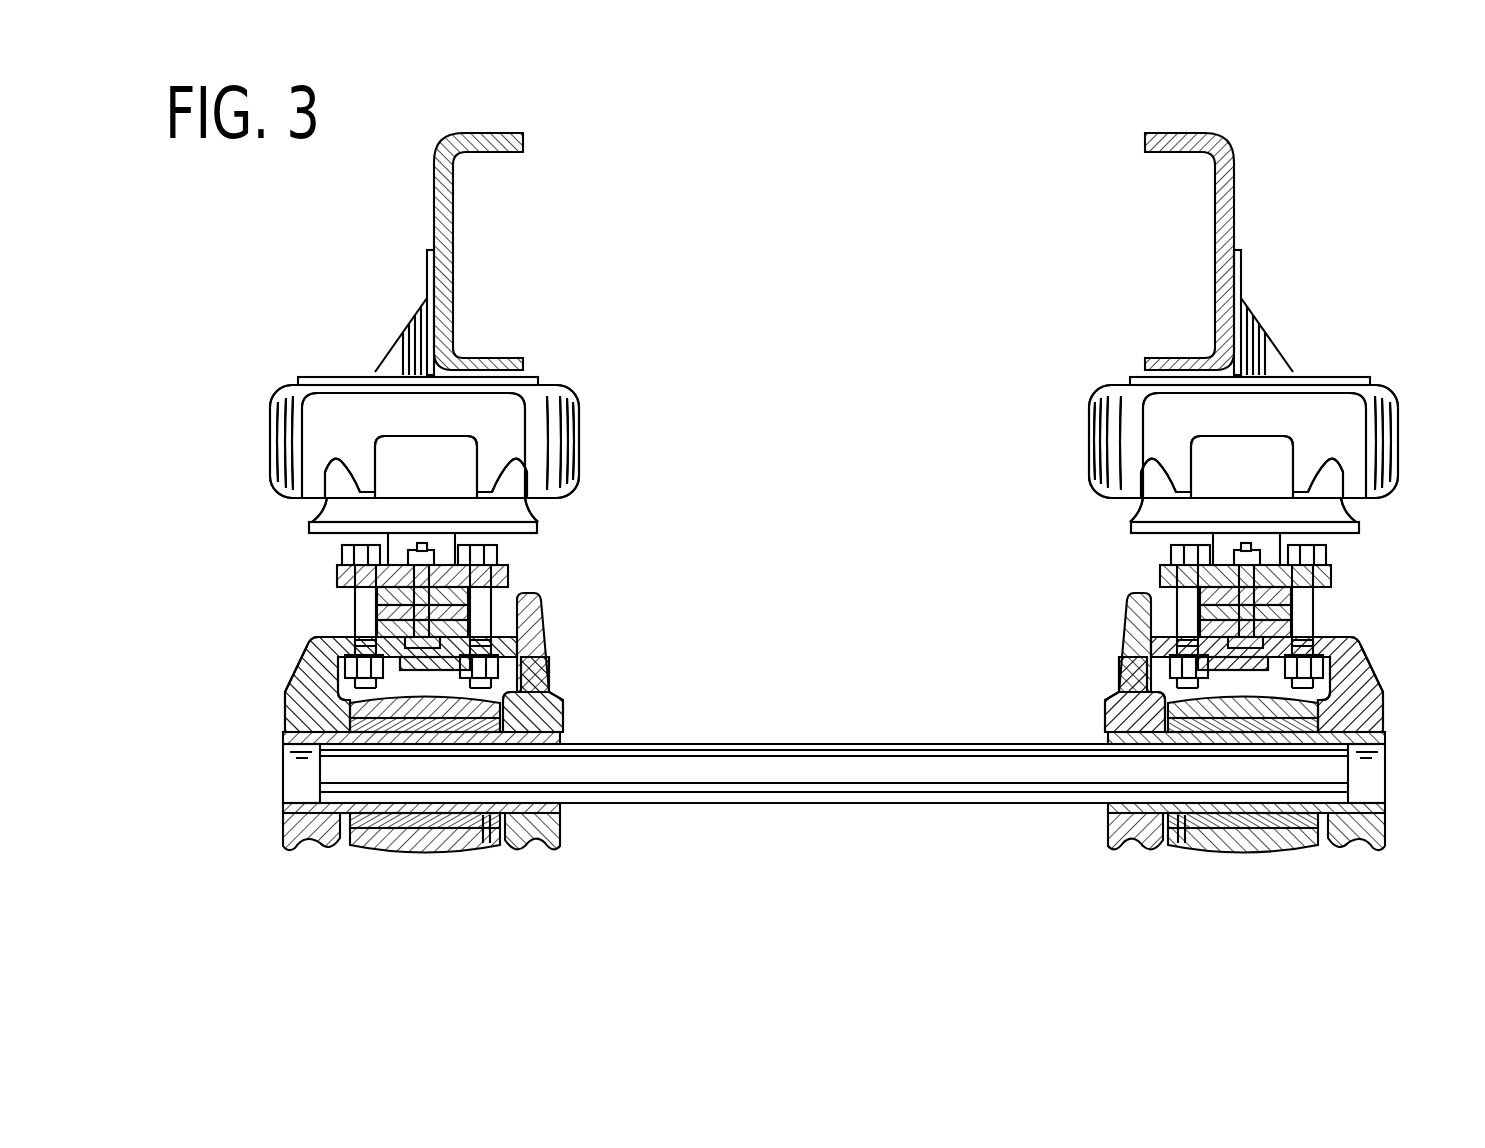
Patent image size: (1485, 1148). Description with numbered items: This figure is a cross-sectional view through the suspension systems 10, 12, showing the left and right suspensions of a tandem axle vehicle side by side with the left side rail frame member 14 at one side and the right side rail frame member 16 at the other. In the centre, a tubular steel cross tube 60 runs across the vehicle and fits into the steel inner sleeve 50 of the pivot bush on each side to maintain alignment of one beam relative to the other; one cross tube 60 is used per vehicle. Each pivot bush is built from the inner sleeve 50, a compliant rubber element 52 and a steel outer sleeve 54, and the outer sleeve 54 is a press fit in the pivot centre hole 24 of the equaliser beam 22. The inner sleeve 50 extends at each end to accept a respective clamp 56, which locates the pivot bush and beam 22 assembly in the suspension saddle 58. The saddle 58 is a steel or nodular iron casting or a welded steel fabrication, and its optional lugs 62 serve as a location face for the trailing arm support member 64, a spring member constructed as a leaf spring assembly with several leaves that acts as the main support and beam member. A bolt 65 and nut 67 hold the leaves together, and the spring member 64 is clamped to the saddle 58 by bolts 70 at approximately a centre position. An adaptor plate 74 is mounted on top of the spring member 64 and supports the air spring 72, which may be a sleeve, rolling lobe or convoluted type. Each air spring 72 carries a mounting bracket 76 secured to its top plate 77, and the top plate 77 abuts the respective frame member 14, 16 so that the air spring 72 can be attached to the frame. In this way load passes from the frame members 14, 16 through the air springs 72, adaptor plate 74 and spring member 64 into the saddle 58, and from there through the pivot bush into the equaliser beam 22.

The suspension system 10 is at (630, 710).
The suspension system 12 is at (1052, 738).
The left side rail frame member 14 is at (523, 142).
The right side rail frame member 16 is at (1237, 180).
The equaliser beam 22 is at (368, 836).
The pivot centre hole 24 is at (485, 832).
The steel inner sleeve 50 is at (298, 852).
The compliant rubber element 52 is at (442, 832).
The steel outer sleeve 54 is at (393, 832).
The clamp 56 is at (548, 832).
The suspension saddle 58 is at (297, 700).
The tubular steel cross tube 60 is at (795, 768).
The lugs 62 is at (522, 623).
The trailing arm support member 64 is at (475, 636).
The bolt 65 is at (475, 578).
The nut 67 is at (420, 548).
The bolts 70 is at (360, 600).
The air spring 72 is at (540, 400).
The adaptor plate 74 is at (337, 578).
The mounting bracket 76 is at (430, 268).
The top plate 77 is at (346, 383).